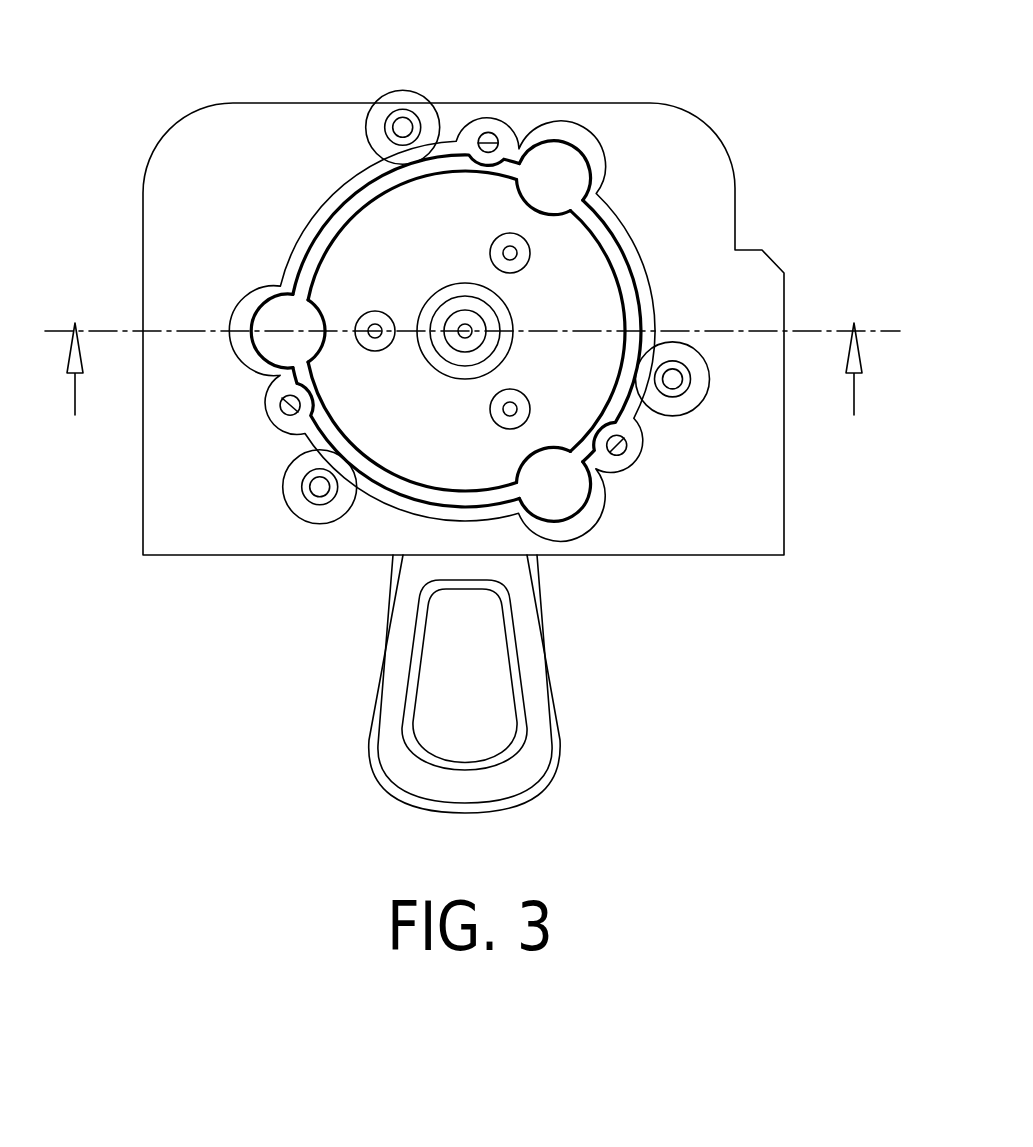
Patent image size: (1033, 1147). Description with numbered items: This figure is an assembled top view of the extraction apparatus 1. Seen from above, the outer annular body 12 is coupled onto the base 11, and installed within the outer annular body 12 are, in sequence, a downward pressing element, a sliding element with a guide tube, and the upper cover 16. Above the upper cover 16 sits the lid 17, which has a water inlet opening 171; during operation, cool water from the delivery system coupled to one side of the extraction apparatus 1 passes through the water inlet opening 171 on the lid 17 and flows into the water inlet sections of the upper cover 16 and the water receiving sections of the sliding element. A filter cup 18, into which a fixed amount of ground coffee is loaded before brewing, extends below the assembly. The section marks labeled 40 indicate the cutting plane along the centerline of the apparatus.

The extraction apparatus 1 is at (655, 252).
The base 11 is at (180, 190).
The outer annular body 12 is at (292, 247).
The upper cover 16 is at (343, 213).
The lid 17 is at (464, 331).
The water inlet opening 171 is at (550, 262).
The filter cup 18 is at (375, 690).
The section line 40 is at (472, 399).